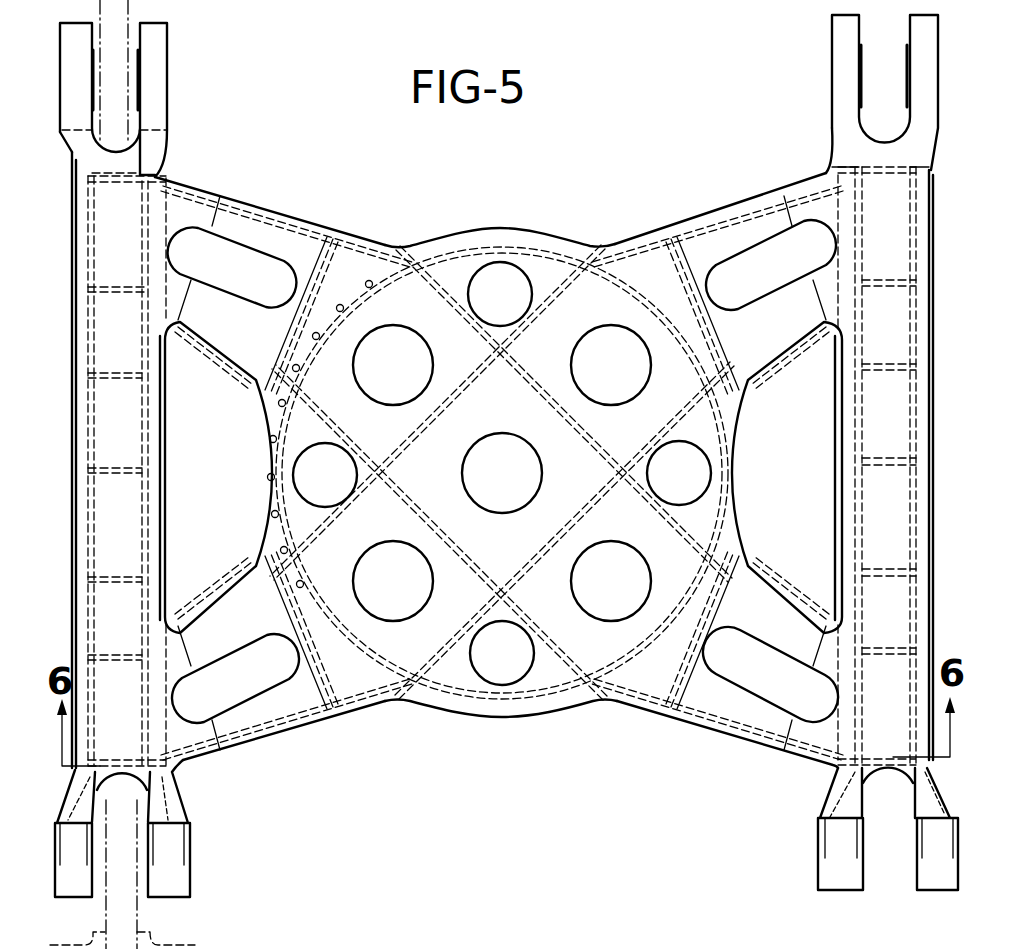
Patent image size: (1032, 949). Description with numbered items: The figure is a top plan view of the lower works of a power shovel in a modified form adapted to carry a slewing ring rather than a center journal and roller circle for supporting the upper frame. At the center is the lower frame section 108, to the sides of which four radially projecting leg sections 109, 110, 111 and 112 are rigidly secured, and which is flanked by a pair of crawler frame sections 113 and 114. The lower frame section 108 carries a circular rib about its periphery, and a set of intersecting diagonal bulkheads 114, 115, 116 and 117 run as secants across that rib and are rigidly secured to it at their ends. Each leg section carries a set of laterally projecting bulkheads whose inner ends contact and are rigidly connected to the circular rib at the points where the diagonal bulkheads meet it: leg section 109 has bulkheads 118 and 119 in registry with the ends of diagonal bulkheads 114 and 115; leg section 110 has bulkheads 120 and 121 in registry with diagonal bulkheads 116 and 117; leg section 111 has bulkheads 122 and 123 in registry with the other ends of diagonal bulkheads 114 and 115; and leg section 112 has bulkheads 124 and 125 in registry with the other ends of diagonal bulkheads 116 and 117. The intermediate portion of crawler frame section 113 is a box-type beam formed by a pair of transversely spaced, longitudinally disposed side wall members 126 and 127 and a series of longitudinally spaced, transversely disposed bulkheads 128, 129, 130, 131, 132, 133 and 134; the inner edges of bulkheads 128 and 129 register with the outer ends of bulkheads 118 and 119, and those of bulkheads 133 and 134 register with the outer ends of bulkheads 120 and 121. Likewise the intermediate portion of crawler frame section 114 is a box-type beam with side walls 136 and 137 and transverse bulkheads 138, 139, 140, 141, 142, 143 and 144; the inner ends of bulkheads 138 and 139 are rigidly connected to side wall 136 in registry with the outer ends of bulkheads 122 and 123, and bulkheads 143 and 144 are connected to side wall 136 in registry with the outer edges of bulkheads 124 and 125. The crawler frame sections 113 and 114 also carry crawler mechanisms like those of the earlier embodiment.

The lower frame section 108 is at (457, 720).
The leg section 109 is at (292, 211).
The leg section 110 is at (262, 748).
The leg section 111 is at (740, 740).
The leg section 112 is at (748, 198).
The crawler frame section 113 is at (76, 522).
The crawler frame section 114 is at (468, 546).
The diagonal bulkhead 115 is at (584, 412).
The diagonal bulkhead 116 is at (452, 420).
The diagonal bulkhead 117 is at (582, 526).
The bulkhead 118 is at (322, 222).
The bulkhead 119 is at (235, 358).
The bulkhead 120 is at (236, 600).
The bulkhead 121 is at (300, 727).
The bulkhead 122 is at (765, 748).
The bulkhead 123 is at (765, 590).
The bulkhead 124 is at (786, 338).
The bulkhead 125 is at (762, 192).
The side wall member 126 is at (96, 416).
The side wall member 127 is at (150, 440).
The bulkhead 128 is at (113, 184).
The bulkhead 129 is at (117, 285).
The bulkhead 130 is at (148, 352).
The bulkhead 131 is at (125, 478).
The bulkhead 132 is at (140, 568).
The bulkhead 133 is at (178, 682).
The bulkhead 134 is at (185, 766).
The side wall 136 is at (840, 412).
The side wall 137 is at (858, 432).
The bulkhead 138 is at (898, 776).
The bulkhead 139 is at (890, 648).
The bulkhead 140 is at (872, 568).
The bulkhead 141 is at (870, 456).
The bulkhead 142 is at (862, 370).
The bulkhead 143 is at (885, 279).
The bulkhead 144 is at (882, 174).